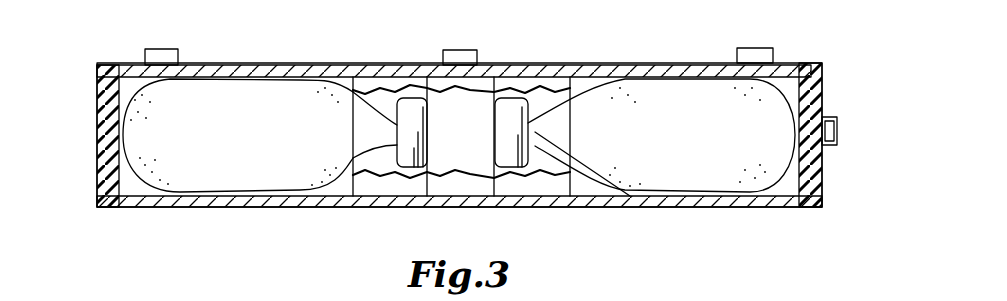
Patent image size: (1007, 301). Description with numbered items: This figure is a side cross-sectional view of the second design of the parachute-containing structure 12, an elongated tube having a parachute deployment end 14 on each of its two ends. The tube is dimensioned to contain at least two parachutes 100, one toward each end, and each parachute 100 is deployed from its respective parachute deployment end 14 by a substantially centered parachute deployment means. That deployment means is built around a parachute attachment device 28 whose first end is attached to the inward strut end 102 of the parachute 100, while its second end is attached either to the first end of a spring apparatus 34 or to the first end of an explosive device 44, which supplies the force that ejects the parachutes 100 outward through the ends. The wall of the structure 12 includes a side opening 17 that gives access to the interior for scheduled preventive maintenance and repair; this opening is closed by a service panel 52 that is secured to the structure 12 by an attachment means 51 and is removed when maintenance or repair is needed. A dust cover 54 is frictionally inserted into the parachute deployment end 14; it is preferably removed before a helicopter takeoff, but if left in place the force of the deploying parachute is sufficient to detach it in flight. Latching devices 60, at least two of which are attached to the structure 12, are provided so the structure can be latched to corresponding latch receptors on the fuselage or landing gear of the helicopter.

The parachute-containing structure 12 is at (332, 64).
The parachute deployment end 14 is at (132, 180).
The side opening 17 is at (382, 160).
The parachute attachment device 28 is at (515, 108).
The spring apparatus 34 is at (440, 153).
The explosive device 44 is at (441, 160).
The attachment means 51 is at (355, 91).
The service panel 52 is at (548, 181).
The dust cover 54 is at (98, 98).
The latching device 60 is at (168, 52).
The parachute 100 is at (234, 90).
The strut end 102 is at (627, 207).